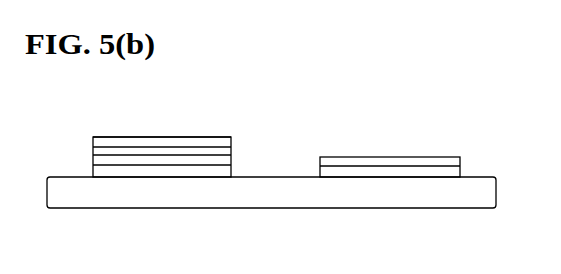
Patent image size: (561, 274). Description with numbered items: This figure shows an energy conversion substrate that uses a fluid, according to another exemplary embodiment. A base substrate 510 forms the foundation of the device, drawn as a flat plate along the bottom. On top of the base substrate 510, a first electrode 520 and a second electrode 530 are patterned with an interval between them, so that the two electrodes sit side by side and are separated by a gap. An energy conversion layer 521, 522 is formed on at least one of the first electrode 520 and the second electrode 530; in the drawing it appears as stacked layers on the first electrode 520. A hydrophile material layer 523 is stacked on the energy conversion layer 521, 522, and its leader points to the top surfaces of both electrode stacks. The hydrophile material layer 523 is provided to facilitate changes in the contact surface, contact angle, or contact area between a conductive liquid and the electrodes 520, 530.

The base substrate 510 is at (278, 198).
The first electrode 520 is at (150, 173).
The energy conversion layer 521 is at (93, 159).
The energy conversion layer 522 is at (93, 144).
The hydrophile material layer 523 is at (330, 157).
The second electrode 530 is at (388, 168).